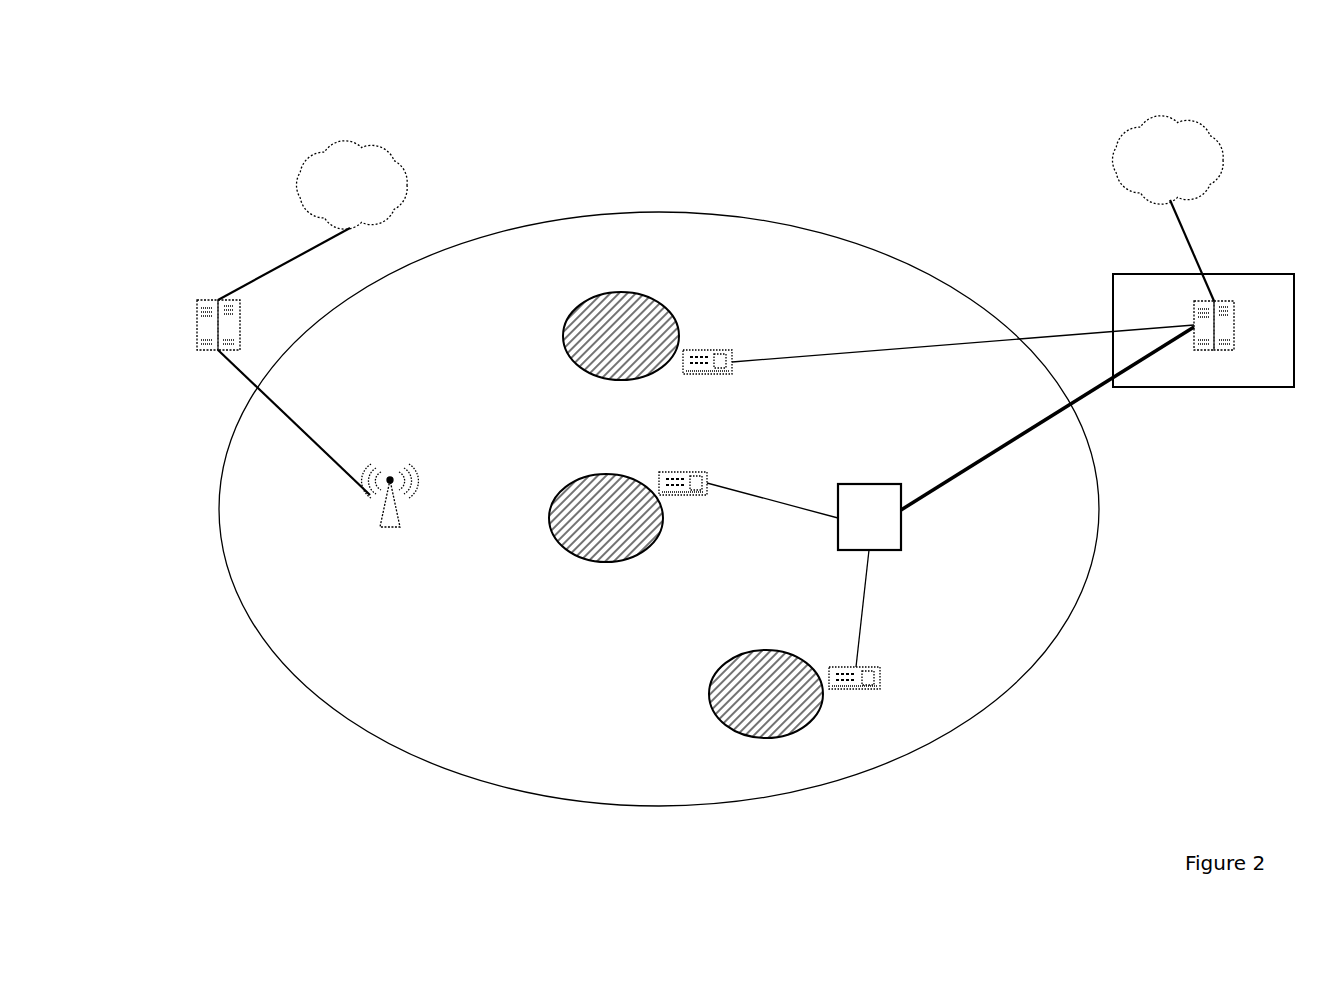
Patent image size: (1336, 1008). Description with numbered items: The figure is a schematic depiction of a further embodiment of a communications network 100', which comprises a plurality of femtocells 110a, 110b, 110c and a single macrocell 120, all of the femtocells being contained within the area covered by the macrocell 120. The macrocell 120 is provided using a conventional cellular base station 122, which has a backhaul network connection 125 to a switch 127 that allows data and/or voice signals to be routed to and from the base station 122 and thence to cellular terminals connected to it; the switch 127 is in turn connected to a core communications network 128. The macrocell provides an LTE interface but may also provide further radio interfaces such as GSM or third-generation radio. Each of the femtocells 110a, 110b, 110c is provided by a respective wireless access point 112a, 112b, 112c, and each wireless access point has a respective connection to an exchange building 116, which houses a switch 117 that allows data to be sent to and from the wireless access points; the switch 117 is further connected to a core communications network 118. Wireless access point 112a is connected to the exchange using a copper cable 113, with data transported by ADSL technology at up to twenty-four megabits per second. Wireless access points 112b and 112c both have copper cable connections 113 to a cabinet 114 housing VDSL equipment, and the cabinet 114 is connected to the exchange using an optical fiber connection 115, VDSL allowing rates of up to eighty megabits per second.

The communications network 100' is at (180, 113).
The femtocell 110a is at (580, 305).
The femtocell 110b is at (565, 548).
The femtocell 110c is at (720, 728).
The wireless access point 112a is at (705, 345).
The wireless access point 112b is at (682, 470).
The wireless access point 112c is at (855, 692).
The copper cable 113 is at (937, 330).
The cabinet 114 is at (900, 550).
The optical fiber connection 115 is at (987, 472).
The exchange building 116 is at (1278, 390).
The switch 117 is at (1212, 352).
The core communications network 118 is at (1105, 163).
The macrocell 120 is at (350, 718).
The cellular base station 122 is at (388, 530).
The backhaul network connection 125 is at (313, 447).
The switch 127 is at (200, 328).
The core communications network 128 is at (353, 140).